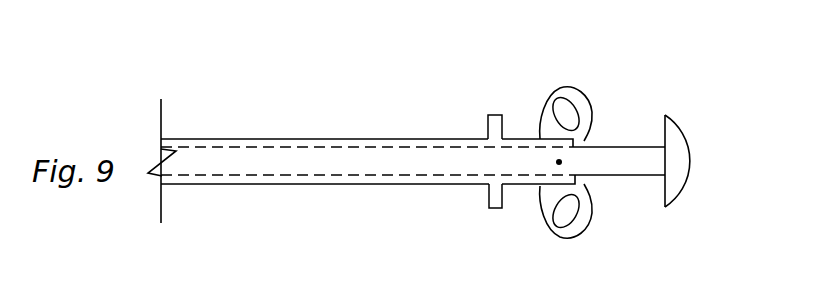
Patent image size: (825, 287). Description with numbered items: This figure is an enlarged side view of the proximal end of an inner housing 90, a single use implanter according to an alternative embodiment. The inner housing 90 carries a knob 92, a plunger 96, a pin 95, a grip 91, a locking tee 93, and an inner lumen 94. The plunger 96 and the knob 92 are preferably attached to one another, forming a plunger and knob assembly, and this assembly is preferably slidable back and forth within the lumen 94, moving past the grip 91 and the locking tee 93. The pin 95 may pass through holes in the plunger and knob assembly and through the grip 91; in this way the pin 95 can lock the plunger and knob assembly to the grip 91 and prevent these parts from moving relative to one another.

The inner housing 90 is at (401, 104).
The grip 91 is at (580, 88).
The knob 92 is at (690, 157).
The locking tee 93 is at (495, 208).
The inner lumen 94 is at (388, 160).
The pin 95 is at (559, 162).
The plunger 96 is at (623, 160).